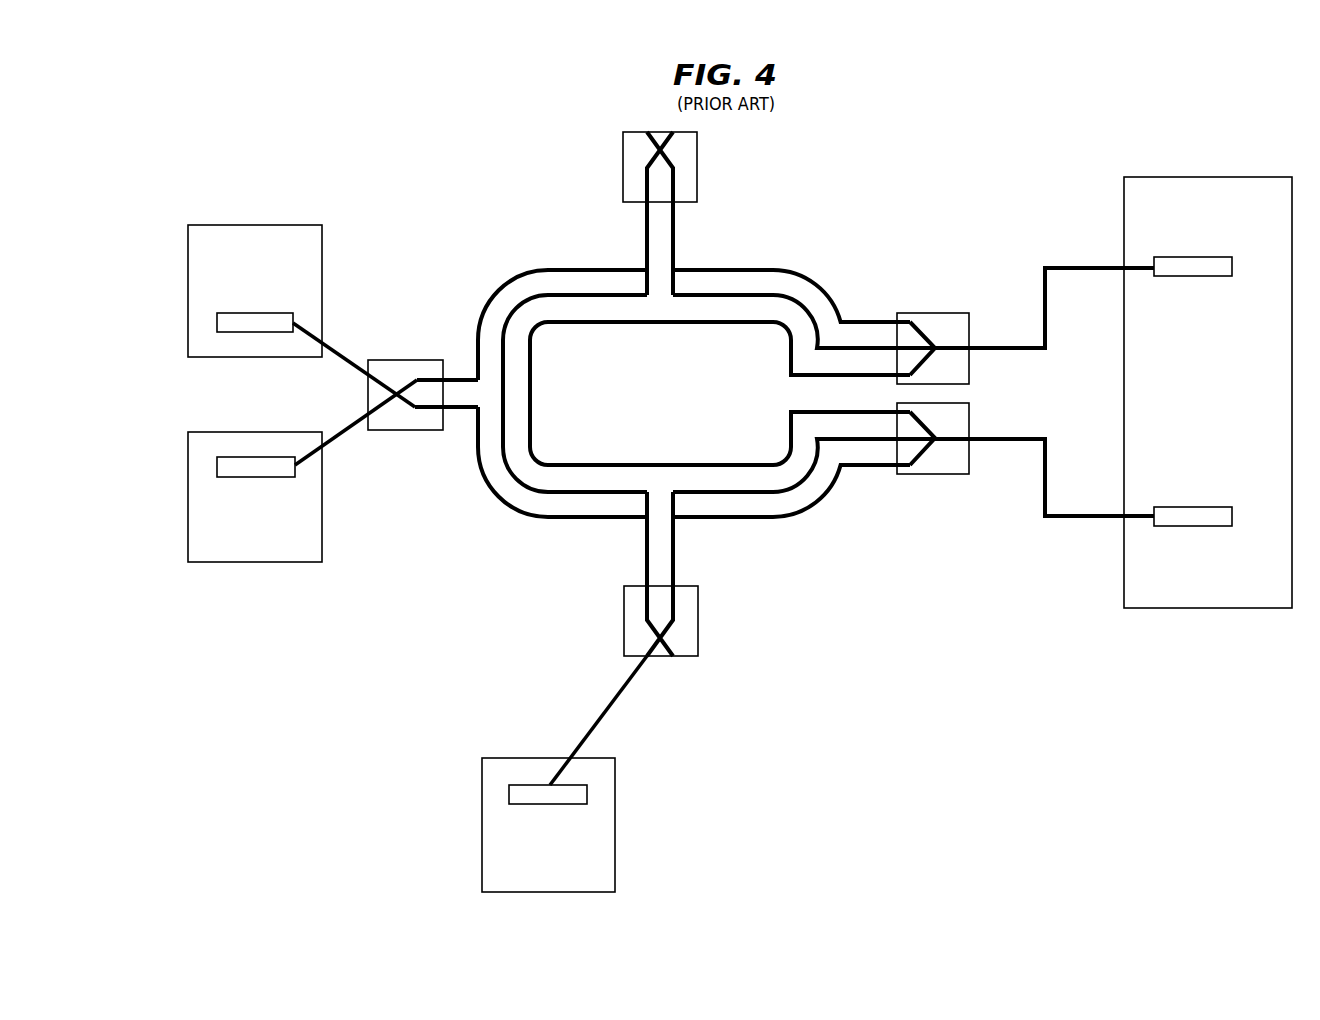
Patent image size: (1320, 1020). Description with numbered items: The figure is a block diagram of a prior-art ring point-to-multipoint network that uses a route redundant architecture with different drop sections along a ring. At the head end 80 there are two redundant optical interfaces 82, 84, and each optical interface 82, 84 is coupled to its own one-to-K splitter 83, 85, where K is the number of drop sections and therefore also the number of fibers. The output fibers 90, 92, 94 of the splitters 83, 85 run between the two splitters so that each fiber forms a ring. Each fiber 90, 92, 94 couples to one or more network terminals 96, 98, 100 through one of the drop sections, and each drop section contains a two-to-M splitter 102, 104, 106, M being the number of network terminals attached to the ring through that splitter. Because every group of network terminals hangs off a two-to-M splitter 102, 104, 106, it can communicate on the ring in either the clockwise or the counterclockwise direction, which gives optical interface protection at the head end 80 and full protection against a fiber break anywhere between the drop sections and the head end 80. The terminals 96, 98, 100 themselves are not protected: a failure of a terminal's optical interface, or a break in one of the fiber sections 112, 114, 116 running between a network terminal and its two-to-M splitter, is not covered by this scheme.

The head end 80 is at (1230, 608).
The optical interface 82 is at (1198, 277).
The 1:K splitter 83 is at (930, 313).
The optical interface 84 is at (1185, 507).
The 1:K splitter 85 is at (938, 474).
The output fiber 90 is at (776, 266).
The output fiber 92 is at (512, 317).
The output fiber 94 is at (540, 330).
The network terminal 96 is at (322, 237).
The network terminal 98 is at (268, 562).
The network terminal 100 is at (615, 793).
The 2:M splitter 102 is at (697, 168).
The 2:M splitter 104 is at (420, 360).
The 2:M splitter 106 is at (698, 627).
The fiber section 112 is at (340, 345).
The fiber section 114 is at (343, 435).
The optical fiber 116 is at (615, 702).